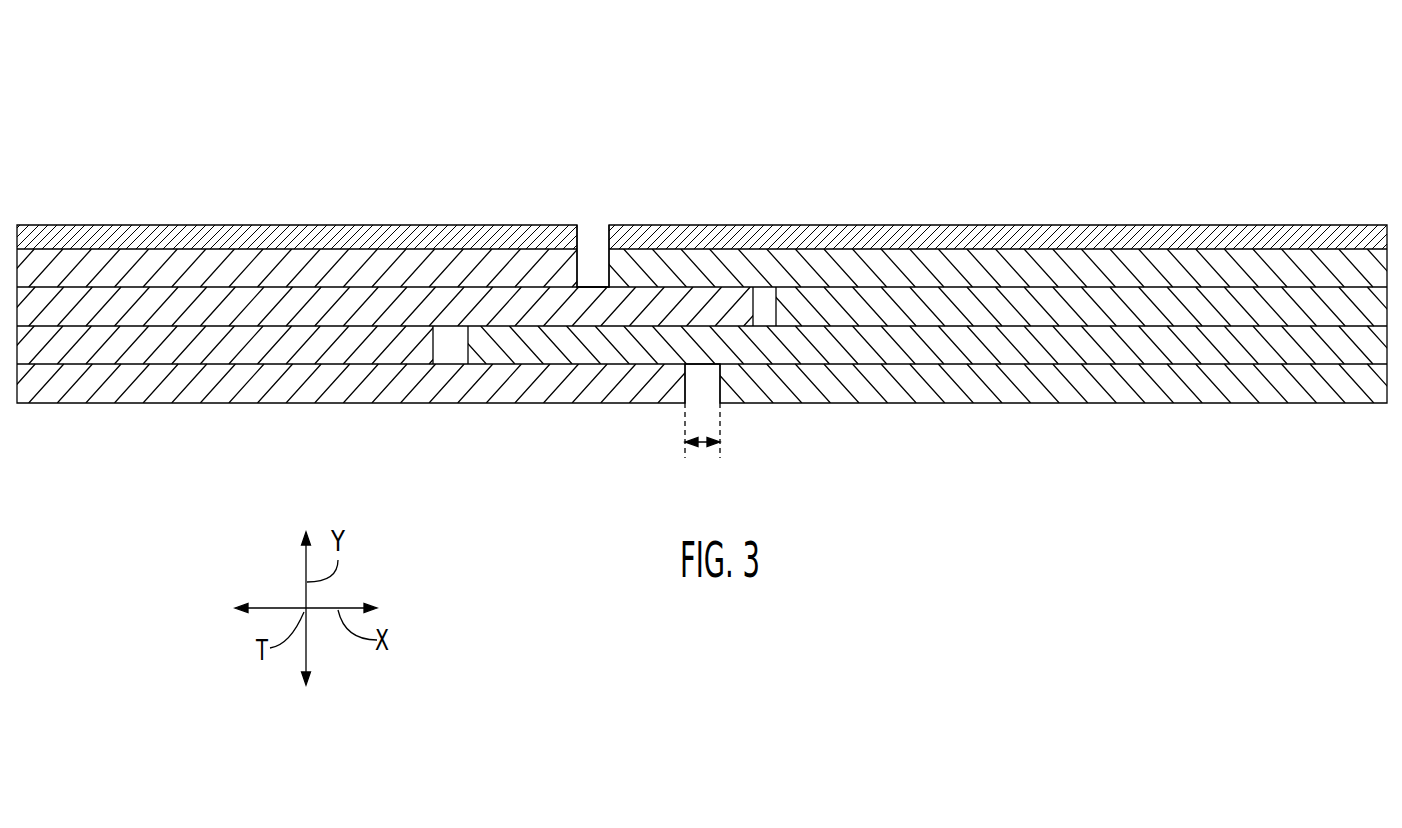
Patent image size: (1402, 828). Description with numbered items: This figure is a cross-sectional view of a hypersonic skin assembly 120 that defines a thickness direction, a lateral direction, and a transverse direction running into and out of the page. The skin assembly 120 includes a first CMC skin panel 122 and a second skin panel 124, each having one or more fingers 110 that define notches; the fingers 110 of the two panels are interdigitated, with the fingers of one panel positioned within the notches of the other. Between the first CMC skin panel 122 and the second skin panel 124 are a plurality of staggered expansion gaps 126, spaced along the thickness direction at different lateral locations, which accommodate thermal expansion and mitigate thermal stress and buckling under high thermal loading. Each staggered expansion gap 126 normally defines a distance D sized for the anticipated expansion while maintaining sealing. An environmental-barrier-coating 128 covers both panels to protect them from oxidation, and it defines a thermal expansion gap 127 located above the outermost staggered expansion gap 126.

The fingers 110 is at (702, 334).
The skin assembly 120 is at (1018, 118).
The first CMC skin panel 122 is at (225, 425).
The second skin panel 124 is at (1153, 423).
The staggered expansion gaps 126 is at (587, 267).
The thermal expansion gap 127 is at (588, 233).
The environmental-barrier-coating 128 is at (742, 225).
The distance D is at (702, 444).